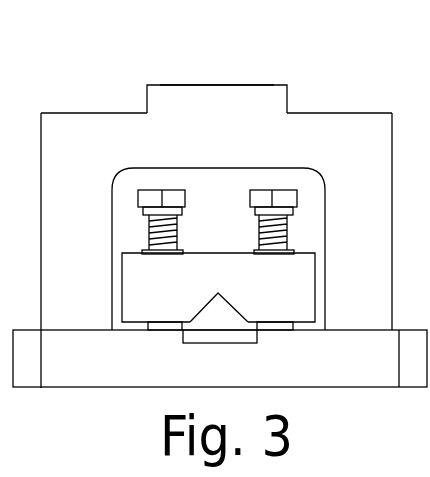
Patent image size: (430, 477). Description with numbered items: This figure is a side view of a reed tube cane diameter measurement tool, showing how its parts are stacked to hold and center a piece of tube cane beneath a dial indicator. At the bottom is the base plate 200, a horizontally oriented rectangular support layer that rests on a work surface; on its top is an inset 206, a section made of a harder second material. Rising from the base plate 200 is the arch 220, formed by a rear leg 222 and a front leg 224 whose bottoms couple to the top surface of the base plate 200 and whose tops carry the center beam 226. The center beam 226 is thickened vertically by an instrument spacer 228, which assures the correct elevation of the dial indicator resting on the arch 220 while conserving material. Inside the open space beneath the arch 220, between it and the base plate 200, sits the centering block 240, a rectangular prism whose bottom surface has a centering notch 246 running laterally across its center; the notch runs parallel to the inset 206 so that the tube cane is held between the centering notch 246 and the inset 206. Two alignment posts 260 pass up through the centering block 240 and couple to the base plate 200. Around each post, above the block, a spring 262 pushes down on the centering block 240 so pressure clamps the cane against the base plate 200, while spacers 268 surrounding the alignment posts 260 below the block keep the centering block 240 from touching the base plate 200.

The base plate 200 is at (380, 383).
The inset 206 is at (200, 343).
The arch 220 is at (213, 208).
The rear leg 222 is at (101, 212).
The front leg 224 is at (383, 211).
The center beam 226 is at (268, 148).
The instrument spacer 228 is at (278, 102).
The centering block 240 is at (179, 298).
The centering notch 246 is at (233, 305).
The alignment posts 260 is at (218, 193).
The spring 262 is at (148, 233).
The spacers 268 is at (157, 332).